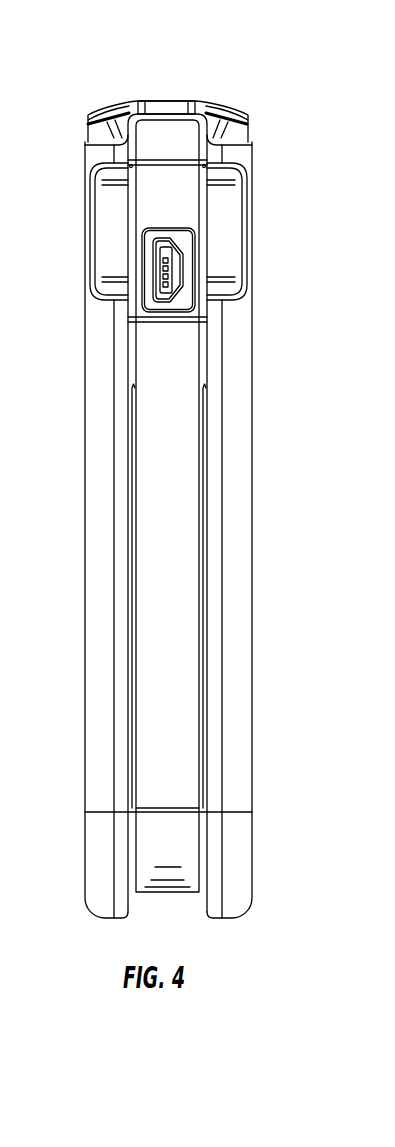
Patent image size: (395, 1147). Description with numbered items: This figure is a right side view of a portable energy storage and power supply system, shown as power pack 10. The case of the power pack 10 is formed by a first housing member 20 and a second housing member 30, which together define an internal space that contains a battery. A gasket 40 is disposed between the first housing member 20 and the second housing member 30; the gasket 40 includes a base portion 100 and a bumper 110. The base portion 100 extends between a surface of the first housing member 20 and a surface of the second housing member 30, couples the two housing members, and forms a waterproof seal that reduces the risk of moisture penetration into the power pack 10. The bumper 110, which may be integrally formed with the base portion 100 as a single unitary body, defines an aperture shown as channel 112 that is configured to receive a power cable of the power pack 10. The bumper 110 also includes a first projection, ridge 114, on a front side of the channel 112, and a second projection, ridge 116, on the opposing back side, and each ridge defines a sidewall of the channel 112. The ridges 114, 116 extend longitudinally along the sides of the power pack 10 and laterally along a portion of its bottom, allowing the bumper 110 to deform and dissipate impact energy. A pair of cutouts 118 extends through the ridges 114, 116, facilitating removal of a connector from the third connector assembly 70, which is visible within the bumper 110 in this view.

The power pack 10 is at (260, 70).
The first housing member 20 is at (110, 118).
The second housing member 30 is at (233, 111).
The gasket 40 is at (149, 93).
The base portion 100 is at (175, 101).
The bumper 110 is at (260, 171).
The channel 112 is at (181, 583).
The ridge 114 is at (103, 517).
The ridge 116 is at (232, 477).
The cutouts 118 is at (234, 256).
The third connector assembly 70 is at (200, 314).